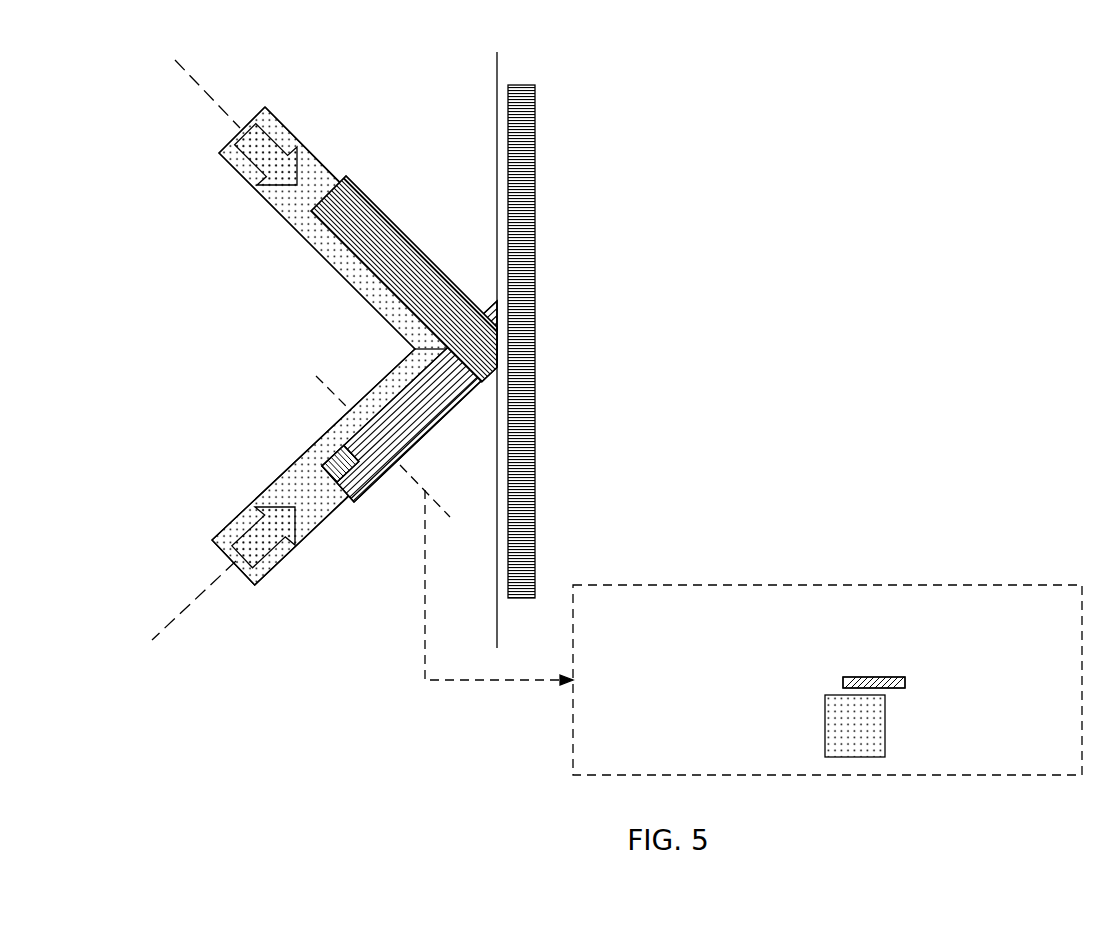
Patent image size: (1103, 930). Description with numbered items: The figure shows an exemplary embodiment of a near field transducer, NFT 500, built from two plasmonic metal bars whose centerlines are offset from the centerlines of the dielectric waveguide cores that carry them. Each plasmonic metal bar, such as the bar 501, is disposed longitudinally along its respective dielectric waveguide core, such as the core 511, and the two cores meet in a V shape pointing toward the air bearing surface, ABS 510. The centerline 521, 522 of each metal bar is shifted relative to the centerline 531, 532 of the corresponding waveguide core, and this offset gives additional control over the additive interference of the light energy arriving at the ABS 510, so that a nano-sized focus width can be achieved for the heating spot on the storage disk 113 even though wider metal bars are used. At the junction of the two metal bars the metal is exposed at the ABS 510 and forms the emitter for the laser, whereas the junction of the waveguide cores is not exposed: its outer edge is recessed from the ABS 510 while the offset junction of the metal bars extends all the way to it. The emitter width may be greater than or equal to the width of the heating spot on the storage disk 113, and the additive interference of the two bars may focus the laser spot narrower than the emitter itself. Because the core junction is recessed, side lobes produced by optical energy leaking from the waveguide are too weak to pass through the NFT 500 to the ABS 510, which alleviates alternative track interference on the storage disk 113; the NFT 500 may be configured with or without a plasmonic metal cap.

The NFT 500 is at (781, 99).
The plasmonic metal bar 501 is at (342, 238).
The ABS 510 is at (500, 68).
The storage disk 113 is at (537, 311).
The dielectric waveguide core 511 is at (264, 106).
The centerline 521 is at (317, 182).
The centerline 522 is at (314, 506).
The centerline 531 is at (203, 92).
The centerline 532 is at (181, 605).